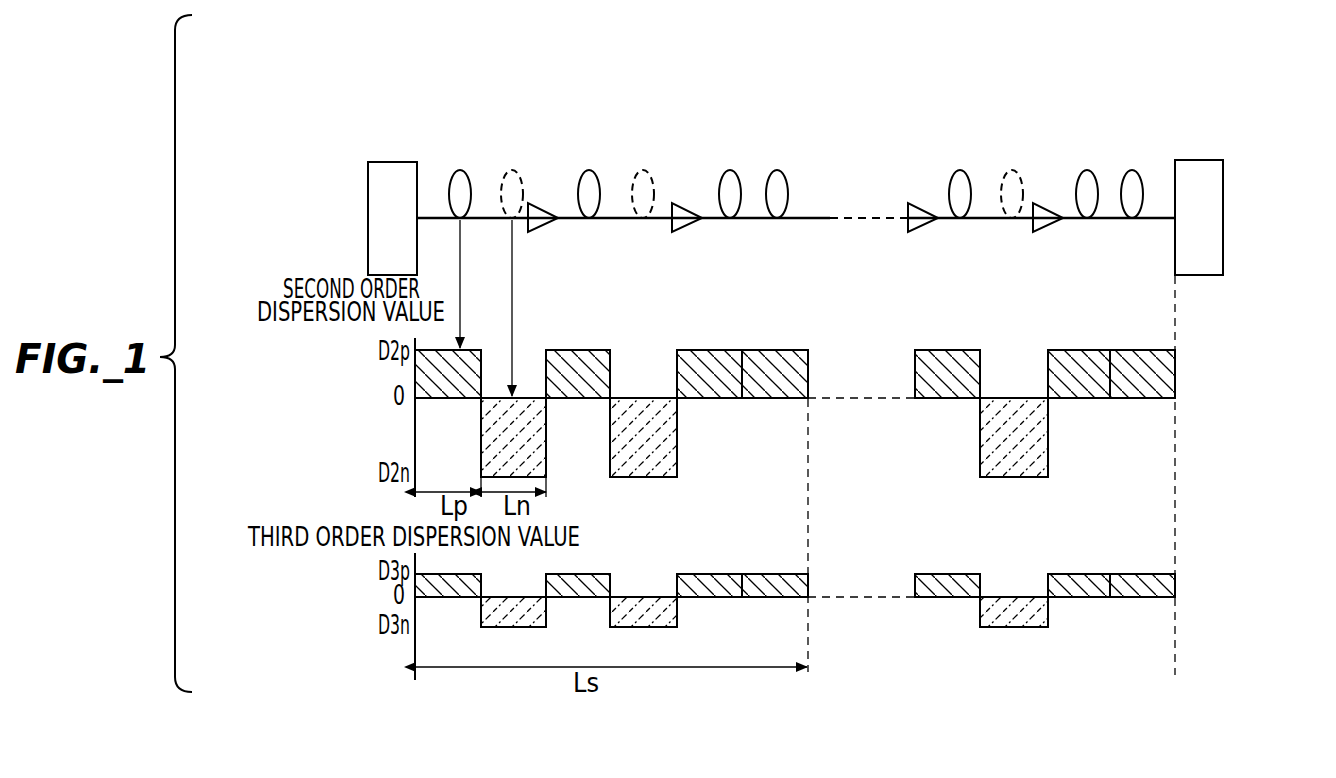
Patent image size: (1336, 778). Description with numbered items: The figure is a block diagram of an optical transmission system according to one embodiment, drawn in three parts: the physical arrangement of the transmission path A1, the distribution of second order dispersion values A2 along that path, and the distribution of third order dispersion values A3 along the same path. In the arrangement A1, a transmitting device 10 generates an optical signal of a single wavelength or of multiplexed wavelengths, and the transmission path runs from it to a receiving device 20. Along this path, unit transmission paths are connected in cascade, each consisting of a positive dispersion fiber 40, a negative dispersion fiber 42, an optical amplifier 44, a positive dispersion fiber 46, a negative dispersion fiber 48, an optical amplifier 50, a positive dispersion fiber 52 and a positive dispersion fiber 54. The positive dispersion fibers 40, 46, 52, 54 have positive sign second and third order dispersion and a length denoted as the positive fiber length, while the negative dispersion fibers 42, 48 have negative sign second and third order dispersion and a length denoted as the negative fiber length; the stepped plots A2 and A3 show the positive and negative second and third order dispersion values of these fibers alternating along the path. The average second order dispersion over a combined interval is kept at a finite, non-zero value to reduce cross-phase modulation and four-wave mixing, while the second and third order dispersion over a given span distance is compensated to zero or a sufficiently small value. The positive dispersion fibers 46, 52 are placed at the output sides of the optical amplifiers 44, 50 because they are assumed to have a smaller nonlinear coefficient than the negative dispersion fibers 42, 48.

The transmitting device 10 is at (403, 128).
The receiving device 20 is at (1197, 160).
The positive dispersion fiber 40 is at (460, 170).
The negative dispersion fiber 42 is at (512, 170).
The optical amplifier 44 is at (532, 232).
The positive dispersion fiber 46 is at (589, 170).
The negative dispersion fiber 48 is at (643, 171).
The optical amplifier 50 is at (680, 232).
The positive dispersion fiber 52 is at (738, 210).
The positive dispersion fiber 54 is at (788, 183).
The physical arrangement of the transmission path A1 is at (358, 209).
The distribution of second order dispersion values A2 is at (373, 399).
The distribution of third order dispersion values A3 is at (373, 587).